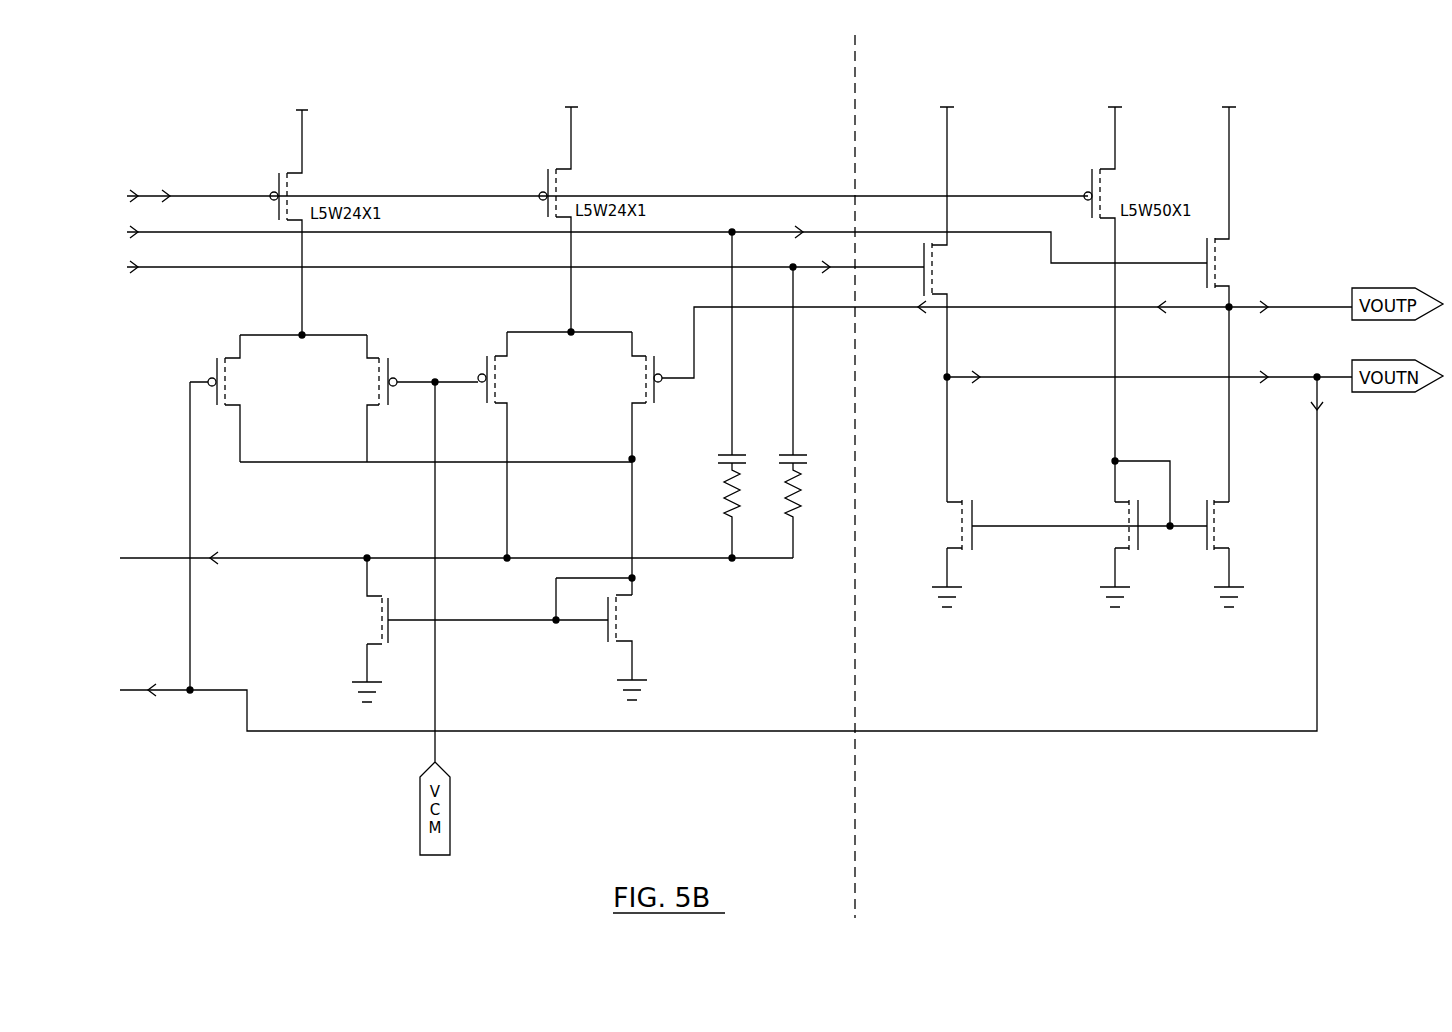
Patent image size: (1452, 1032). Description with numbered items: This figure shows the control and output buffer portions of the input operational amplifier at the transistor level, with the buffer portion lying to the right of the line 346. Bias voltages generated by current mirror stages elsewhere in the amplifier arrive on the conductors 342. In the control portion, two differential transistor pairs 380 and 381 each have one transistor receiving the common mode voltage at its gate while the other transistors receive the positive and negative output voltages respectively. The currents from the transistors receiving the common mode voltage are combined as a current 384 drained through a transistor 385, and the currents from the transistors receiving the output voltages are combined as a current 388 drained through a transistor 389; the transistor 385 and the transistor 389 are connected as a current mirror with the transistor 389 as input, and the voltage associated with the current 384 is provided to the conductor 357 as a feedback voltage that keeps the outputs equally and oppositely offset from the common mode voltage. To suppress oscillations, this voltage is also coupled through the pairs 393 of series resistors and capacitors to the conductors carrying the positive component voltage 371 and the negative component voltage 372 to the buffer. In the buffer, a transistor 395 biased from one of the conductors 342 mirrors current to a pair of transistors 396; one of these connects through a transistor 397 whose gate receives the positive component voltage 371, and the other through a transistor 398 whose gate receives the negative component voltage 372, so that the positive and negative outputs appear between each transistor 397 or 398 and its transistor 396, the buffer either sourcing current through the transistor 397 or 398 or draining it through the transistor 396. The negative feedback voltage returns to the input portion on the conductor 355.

The conductors 342 is at (173, 197).
The line 346 is at (858, 74).
The conductor 355 is at (191, 630).
The conductor 357 is at (230, 555).
The positive component voltage 371 is at (185, 234).
The negative component voltage 372 is at (190, 270).
The differential transistor pair 380 is at (625, 322).
The differential transistor pair 381 is at (376, 334).
The current 384 is at (370, 582).
The transistor 385 is at (382, 646).
The current 388 is at (626, 526).
The transistor 389 is at (608, 628).
The pairs of series resistors and capacitors 393 is at (790, 465).
The transistor 395 is at (1122, 549).
The transistors 396 is at (975, 517).
The transistor 397 is at (1212, 254).
The transistor 398 is at (950, 245).